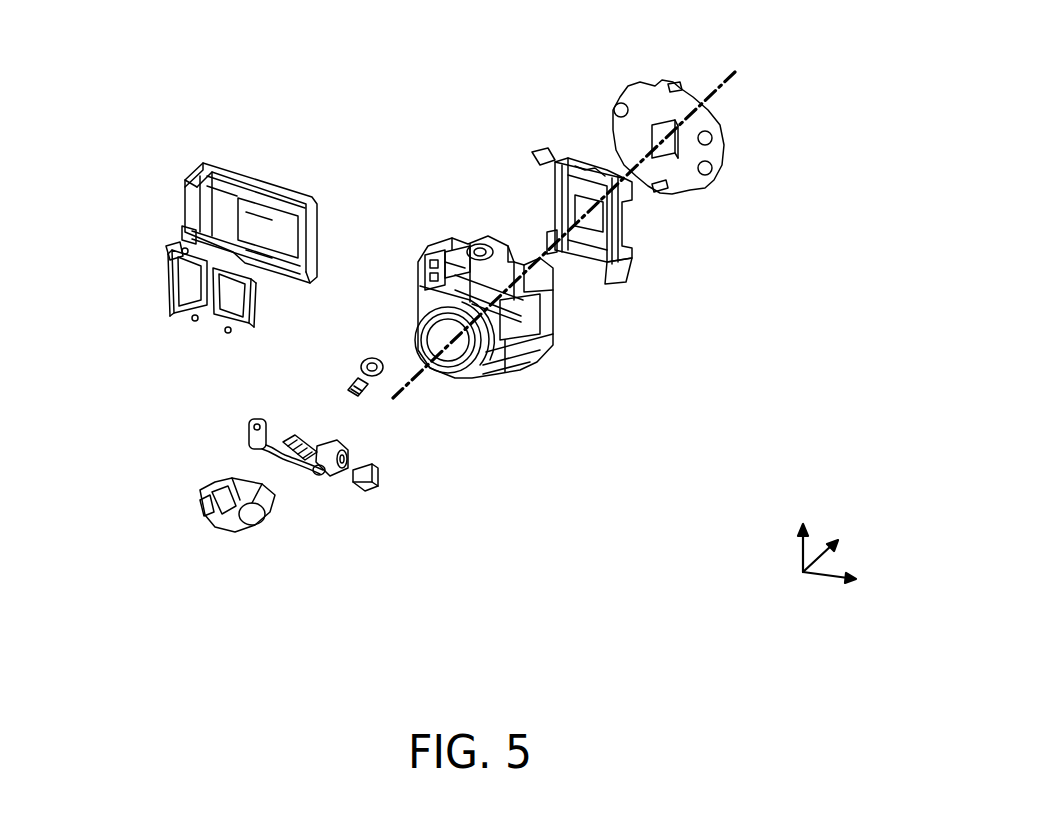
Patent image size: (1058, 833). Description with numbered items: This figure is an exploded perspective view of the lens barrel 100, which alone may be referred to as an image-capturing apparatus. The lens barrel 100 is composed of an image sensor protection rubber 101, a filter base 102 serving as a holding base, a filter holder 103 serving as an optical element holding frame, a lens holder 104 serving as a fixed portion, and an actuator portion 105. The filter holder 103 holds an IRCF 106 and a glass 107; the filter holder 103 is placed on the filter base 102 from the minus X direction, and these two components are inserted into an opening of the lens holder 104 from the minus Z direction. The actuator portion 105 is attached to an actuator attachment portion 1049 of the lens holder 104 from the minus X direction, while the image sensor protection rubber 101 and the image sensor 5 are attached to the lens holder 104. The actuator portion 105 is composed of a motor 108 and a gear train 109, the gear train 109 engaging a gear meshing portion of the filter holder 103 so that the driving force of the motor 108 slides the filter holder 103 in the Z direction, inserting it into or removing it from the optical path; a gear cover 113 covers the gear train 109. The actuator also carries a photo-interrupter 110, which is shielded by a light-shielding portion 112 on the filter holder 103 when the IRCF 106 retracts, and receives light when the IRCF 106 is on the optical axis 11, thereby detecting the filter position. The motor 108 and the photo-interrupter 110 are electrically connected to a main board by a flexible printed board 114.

The lens barrel 100 is at (477, 308).
The filter base 102 is at (220, 210).
The light-shielding portion 112 is at (176, 256).
The filter holder 103 is at (137, 341).
The IRCF 106 is at (190, 290).
The glass 107 is at (222, 307).
The actuator attachment portion 1049 is at (478, 245).
The optical axis 11 is at (725, 88).
The image sensor 5 is at (675, 148).
The image sensor protection rubber 101 is at (613, 250).
The lens holder 104 is at (530, 338).
The gear train 109 is at (330, 437).
The motor 108 is at (342, 452).
The flexible printed board 114 is at (373, 480).
The actuator portion 105 is at (340, 474).
The photo-interrupter 110 is at (252, 438).
The gear cover 113 is at (218, 512).